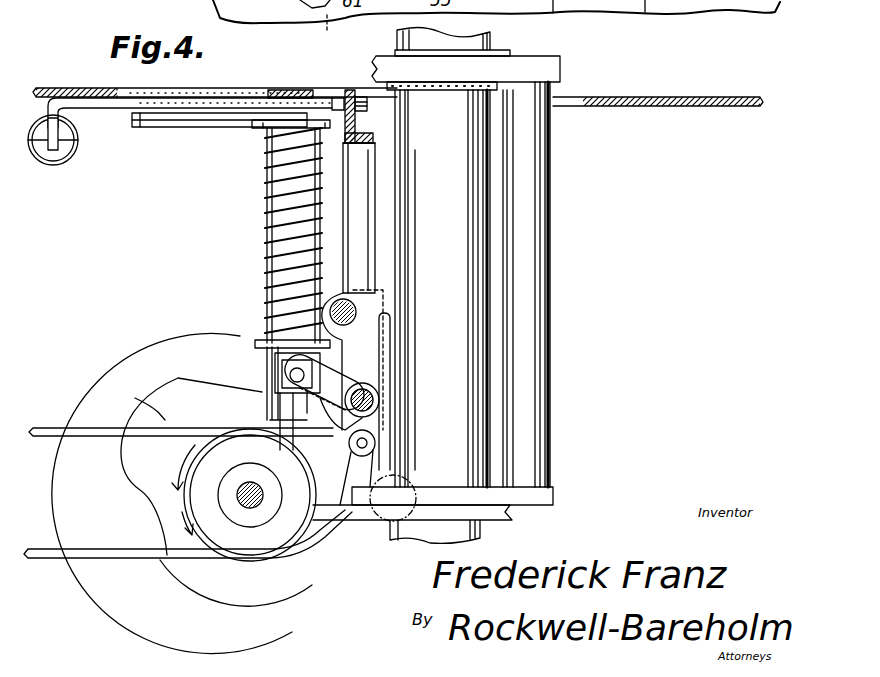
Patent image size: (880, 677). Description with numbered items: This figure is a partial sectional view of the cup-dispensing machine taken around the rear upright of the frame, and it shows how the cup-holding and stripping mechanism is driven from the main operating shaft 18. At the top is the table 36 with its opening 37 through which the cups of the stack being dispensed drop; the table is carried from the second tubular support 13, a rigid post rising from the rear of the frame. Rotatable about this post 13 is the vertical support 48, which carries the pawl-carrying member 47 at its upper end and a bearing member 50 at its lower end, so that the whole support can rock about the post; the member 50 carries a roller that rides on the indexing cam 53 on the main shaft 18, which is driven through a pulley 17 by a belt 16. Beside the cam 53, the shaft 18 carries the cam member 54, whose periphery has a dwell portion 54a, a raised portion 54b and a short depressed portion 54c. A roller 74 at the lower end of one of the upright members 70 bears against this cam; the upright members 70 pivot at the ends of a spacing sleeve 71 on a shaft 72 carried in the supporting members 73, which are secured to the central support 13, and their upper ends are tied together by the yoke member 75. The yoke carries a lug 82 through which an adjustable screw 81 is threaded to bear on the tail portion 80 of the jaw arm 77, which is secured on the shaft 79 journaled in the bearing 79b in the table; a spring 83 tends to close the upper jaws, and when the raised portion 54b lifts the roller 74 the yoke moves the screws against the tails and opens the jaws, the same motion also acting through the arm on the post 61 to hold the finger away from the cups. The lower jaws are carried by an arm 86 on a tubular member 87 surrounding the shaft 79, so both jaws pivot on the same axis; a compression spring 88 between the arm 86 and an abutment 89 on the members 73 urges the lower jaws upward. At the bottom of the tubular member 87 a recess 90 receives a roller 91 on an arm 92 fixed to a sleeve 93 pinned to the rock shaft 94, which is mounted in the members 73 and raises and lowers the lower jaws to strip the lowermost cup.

The second tubular support 13 is at (488, 40).
The belt 16 is at (44, 428).
The pulley 17 is at (257, 463).
The shaft 18 is at (260, 492).
The table 36 is at (57, 88).
The opening 37 is at (233, 90).
The pawl-carrying member 47 is at (550, 66).
The vertical support 48 is at (537, 237).
The bearing member 50 is at (553, 497).
The indexing cam 53 is at (104, 380).
The cam member 54 is at (195, 416).
The dwell portion 54a is at (220, 598).
The raised portion 54b is at (145, 400).
The depressed portion 54c is at (340, 436).
The post 61 is at (326, 34).
The upright member 70 is at (358, 215).
The spacing sleeve 71 is at (346, 300).
The shaft 72 is at (357, 311).
The supporting member 73 is at (383, 292).
The roller 74 is at (392, 455).
The yoke member 75 is at (375, 141).
The arm 77 is at (170, 104).
The shaft 79 is at (290, 437).
The bearing 79b is at (292, 90).
The tail portion 80 is at (320, 108).
The adjustable screw 81 is at (368, 108).
The lug 82 is at (353, 90).
The spring 83 is at (50, 163).
The arm 86 is at (168, 120).
The tubular member 87 is at (265, 174).
The compression spring 88 is at (265, 203).
The abutment 89 is at (262, 342).
The recess 90 is at (275, 362).
The roller 91 is at (268, 378).
The arm 92 is at (333, 383).
The sleeve 93 is at (378, 395).
The shaft 94 is at (378, 403).